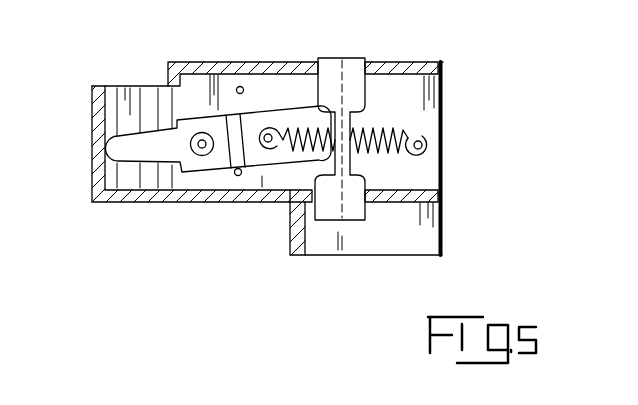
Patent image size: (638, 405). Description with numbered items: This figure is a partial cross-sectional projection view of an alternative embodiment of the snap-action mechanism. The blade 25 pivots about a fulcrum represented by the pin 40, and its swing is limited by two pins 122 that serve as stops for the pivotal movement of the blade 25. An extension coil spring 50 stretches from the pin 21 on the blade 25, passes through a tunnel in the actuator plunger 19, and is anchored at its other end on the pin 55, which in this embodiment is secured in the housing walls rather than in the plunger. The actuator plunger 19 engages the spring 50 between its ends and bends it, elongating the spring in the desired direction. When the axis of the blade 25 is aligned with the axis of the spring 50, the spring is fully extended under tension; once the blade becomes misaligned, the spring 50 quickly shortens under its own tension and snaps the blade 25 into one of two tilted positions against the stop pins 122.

The actuator plunger 19 is at (357, 59).
The pin 21 is at (268, 150).
The blade 25 is at (192, 124).
The pin 40 is at (307, 127).
The extension coil spring 50 is at (374, 126).
The pin 55 is at (434, 140).
The pins 122 is at (238, 86).